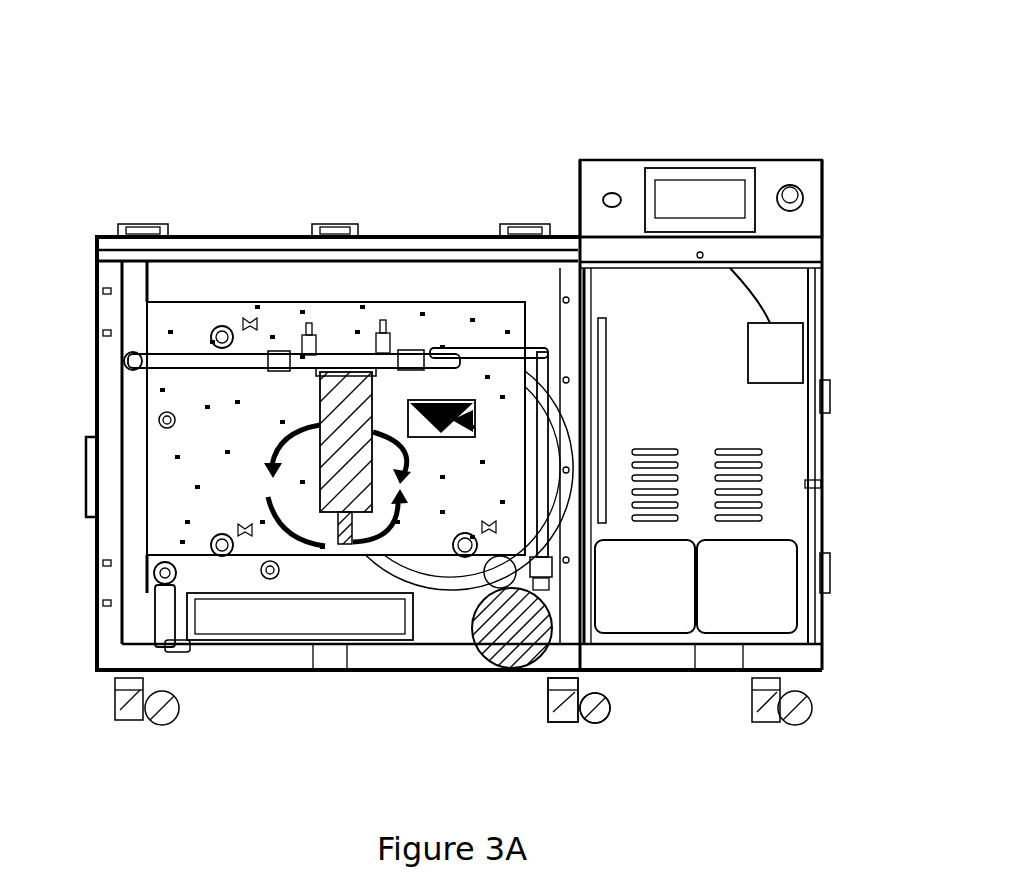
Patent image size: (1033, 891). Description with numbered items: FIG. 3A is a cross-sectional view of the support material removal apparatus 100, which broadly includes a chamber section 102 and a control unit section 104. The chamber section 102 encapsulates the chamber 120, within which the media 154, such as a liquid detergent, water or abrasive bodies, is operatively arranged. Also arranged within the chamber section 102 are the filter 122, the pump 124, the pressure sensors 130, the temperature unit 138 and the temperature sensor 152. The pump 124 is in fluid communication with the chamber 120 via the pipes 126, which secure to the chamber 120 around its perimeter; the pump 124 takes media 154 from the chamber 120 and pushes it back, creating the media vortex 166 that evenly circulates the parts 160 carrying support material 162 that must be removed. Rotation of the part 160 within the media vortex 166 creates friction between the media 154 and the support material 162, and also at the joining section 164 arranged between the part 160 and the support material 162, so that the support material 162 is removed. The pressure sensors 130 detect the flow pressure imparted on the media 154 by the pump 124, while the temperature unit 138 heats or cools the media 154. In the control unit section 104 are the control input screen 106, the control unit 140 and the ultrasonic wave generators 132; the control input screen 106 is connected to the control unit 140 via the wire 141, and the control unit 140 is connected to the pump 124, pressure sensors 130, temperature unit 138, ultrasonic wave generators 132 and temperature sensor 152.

The support material removal apparatus 100 is at (709, 116).
The chamber section 102 is at (343, 214).
The control unit section 104 is at (777, 141).
The control input screen 106 is at (770, 220).
The chamber 120 is at (134, 530).
The filter 122 is at (301, 411).
The pump 124 is at (518, 680).
The pipes 126 is at (597, 569).
The pressure sensors 130 is at (275, 331).
The ultrasonic wave generators 132 is at (803, 599).
The temperature unit 138 is at (79, 529).
The control unit 140 is at (799, 403).
The wire 141 is at (771, 296).
The temperature sensor 152 is at (192, 583).
The media 154 is at (217, 377).
The part 160 is at (456, 384).
The support material 162 is at (421, 454).
The joining section 164 is at (463, 451).
The media vortex 166 is at (244, 492).